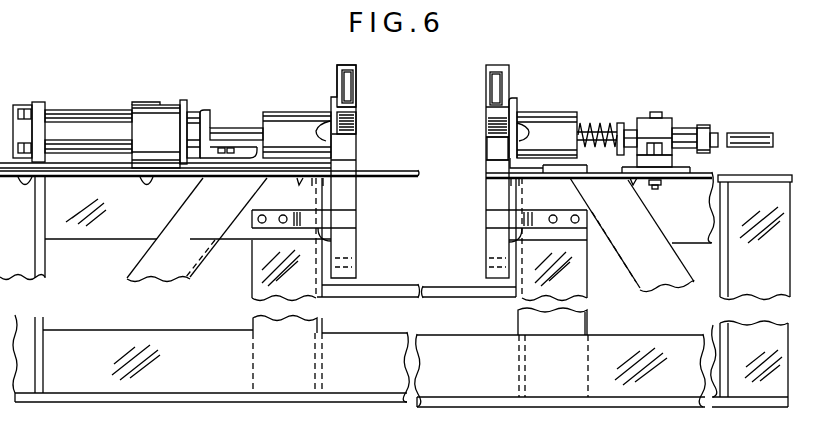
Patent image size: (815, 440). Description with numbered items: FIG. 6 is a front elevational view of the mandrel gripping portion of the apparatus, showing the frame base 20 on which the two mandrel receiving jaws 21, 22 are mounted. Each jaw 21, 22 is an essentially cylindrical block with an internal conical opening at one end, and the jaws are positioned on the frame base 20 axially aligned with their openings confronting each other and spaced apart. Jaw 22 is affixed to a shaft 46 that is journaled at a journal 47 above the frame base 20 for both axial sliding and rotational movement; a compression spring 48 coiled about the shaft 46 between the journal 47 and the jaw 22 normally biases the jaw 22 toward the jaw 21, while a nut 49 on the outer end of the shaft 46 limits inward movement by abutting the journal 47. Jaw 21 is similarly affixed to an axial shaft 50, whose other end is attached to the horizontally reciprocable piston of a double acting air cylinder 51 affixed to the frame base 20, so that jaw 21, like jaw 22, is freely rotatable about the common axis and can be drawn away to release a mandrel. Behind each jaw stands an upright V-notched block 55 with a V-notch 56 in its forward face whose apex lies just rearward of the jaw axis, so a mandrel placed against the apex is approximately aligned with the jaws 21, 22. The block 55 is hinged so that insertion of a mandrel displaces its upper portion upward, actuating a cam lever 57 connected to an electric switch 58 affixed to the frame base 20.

The frame base 20 is at (787, 355).
The mandrel receiving jaw 21 is at (302, 112).
The mandrel receiving jaw 22 is at (545, 112).
The shaft 46 is at (735, 133).
The journal 47 is at (647, 118).
The compression spring 48 is at (597, 123).
The nut 49 is at (707, 125).
The axial shaft 50 is at (230, 128).
The air cylinder 51 is at (105, 122).
The V-notched block 55 is at (360, 112).
The V-notch 56 is at (487, 143).
The cam lever 57 is at (353, 83).
The electric switch 58 is at (357, 66).